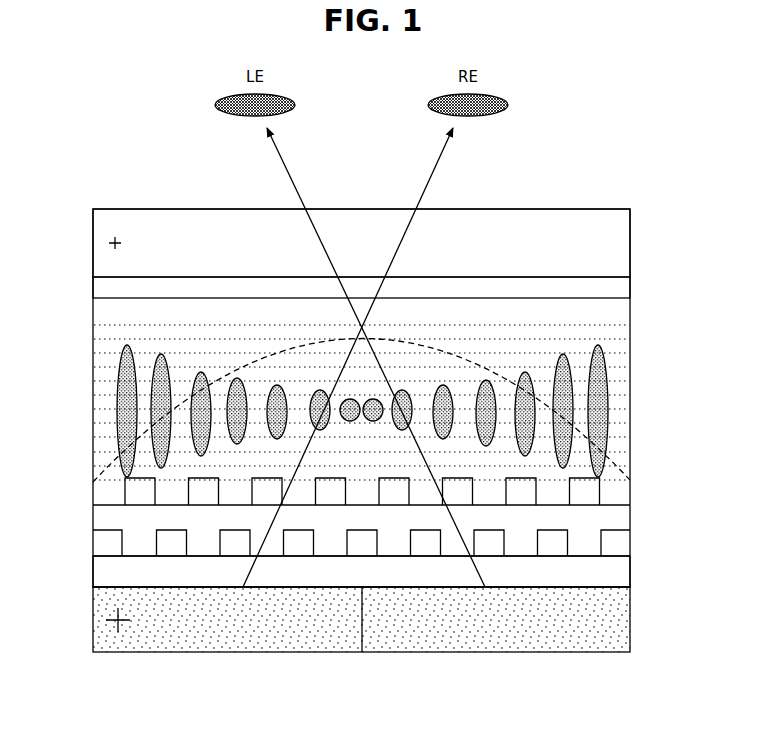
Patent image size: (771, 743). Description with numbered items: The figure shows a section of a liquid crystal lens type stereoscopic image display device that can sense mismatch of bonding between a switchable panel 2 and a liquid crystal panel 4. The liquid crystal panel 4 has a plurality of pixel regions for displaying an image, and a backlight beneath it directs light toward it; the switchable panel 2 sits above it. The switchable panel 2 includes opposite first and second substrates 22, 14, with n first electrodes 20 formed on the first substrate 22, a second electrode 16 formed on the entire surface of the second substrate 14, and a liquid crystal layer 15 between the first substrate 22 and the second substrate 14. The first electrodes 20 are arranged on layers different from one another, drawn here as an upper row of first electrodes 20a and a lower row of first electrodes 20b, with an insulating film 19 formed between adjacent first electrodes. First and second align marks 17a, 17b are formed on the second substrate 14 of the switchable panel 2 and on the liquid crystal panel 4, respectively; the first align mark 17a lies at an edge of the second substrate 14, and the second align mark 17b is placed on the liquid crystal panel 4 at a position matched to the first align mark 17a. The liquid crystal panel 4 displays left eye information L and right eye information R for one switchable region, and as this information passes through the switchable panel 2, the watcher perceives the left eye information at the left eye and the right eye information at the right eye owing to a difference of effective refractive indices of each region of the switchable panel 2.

The switchable panel 2 is at (40, 209).
The liquid crystal panel 4 is at (40, 587).
The second substrate 14 is at (630, 240).
The liquid crystal layer 15 is at (630, 330).
The second electrode 16 is at (630, 287).
The first align mark 17a is at (118, 232).
The second align mark 17b is at (120, 632).
The insulating film 19 is at (93, 519).
The first electrodes 20 is at (417, 516).
The first electrodes 20a is at (592, 492).
The first electrodes 20b is at (630, 540).
The first substrate 22 is at (630, 574).